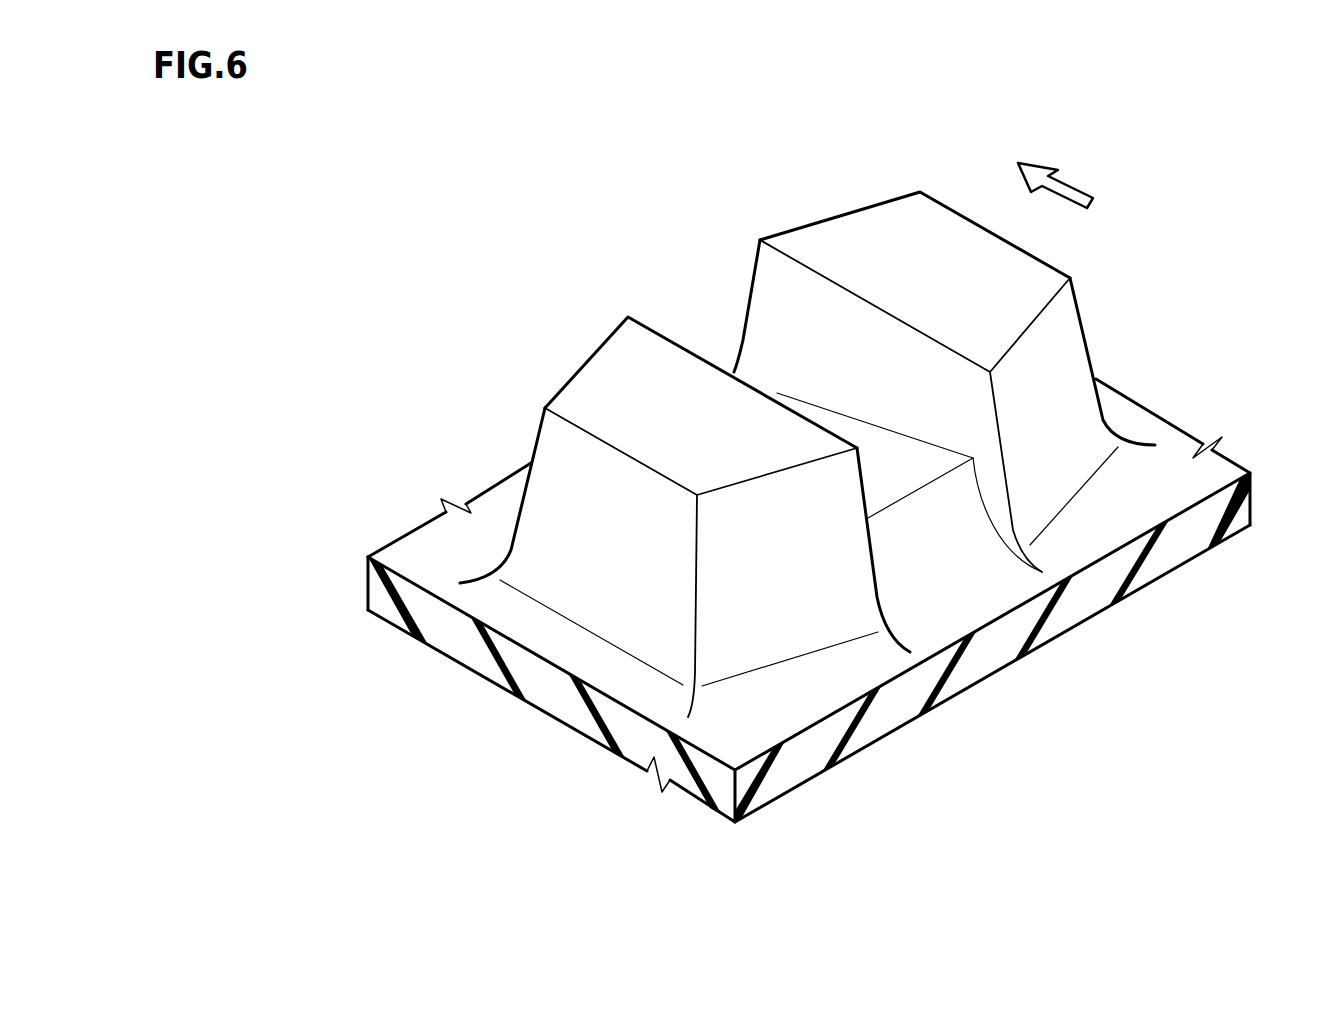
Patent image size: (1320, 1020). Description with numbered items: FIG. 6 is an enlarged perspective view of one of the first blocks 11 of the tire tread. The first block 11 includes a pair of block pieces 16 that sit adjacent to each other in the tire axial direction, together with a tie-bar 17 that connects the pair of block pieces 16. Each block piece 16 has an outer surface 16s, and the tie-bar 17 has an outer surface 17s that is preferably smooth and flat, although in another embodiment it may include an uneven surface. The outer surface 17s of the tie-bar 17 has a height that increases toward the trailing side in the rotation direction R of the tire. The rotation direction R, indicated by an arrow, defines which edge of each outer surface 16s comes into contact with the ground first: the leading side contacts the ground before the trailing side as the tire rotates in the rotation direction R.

The first block 11 is at (455, 292).
The block piece 16 is at (612, 410).
The outer surface of block piece 16s is at (643, 368).
The tie-bar 17 is at (920, 532).
The outer surface of tie-bar 17s is at (895, 460).
The rotation direction R is at (1065, 194).